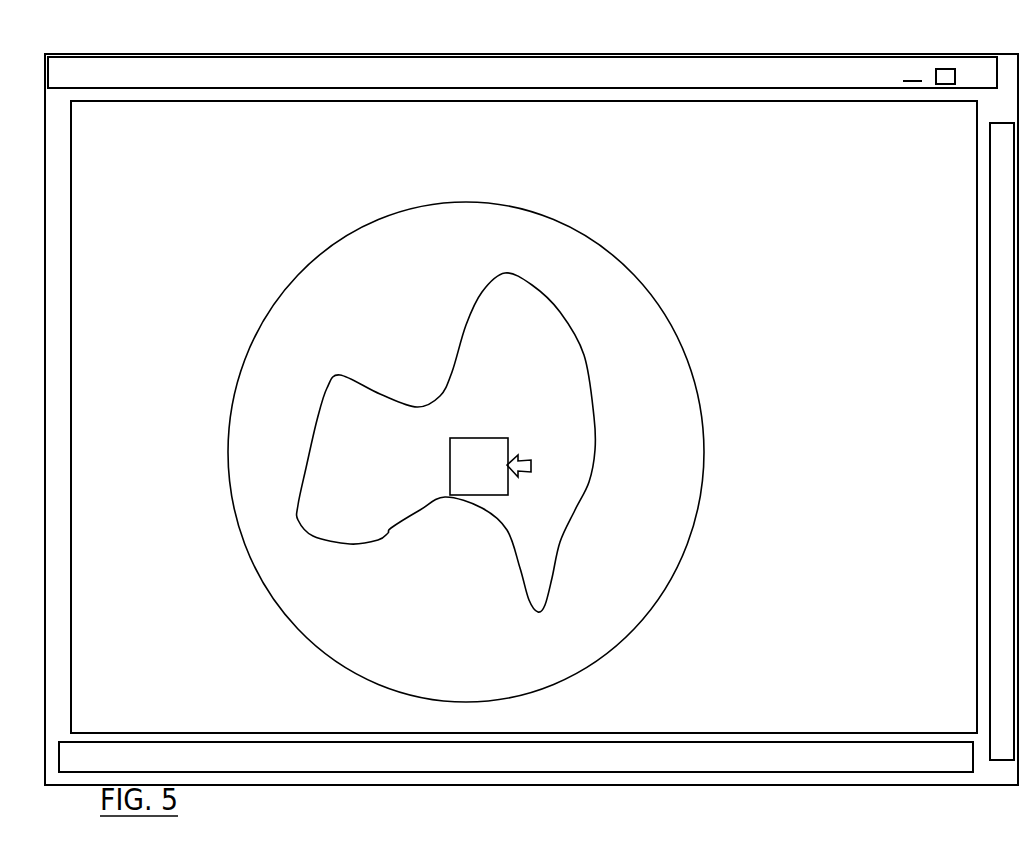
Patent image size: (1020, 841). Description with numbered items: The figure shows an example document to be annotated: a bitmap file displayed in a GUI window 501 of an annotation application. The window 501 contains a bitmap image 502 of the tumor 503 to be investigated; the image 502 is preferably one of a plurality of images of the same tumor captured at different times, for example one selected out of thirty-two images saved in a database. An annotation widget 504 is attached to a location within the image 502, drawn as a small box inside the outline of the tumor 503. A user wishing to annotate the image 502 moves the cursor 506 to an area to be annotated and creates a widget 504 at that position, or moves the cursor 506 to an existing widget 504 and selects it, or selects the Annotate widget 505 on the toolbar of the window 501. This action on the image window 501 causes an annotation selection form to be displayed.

The GUI window 501 is at (160, 55).
The bitmap image 502 is at (301, 265).
The tumor 503 is at (371, 451).
The annotation widget 504 is at (462, 437).
The Annotate widget 505 is at (326, 82).
The cursor 506 is at (532, 462).